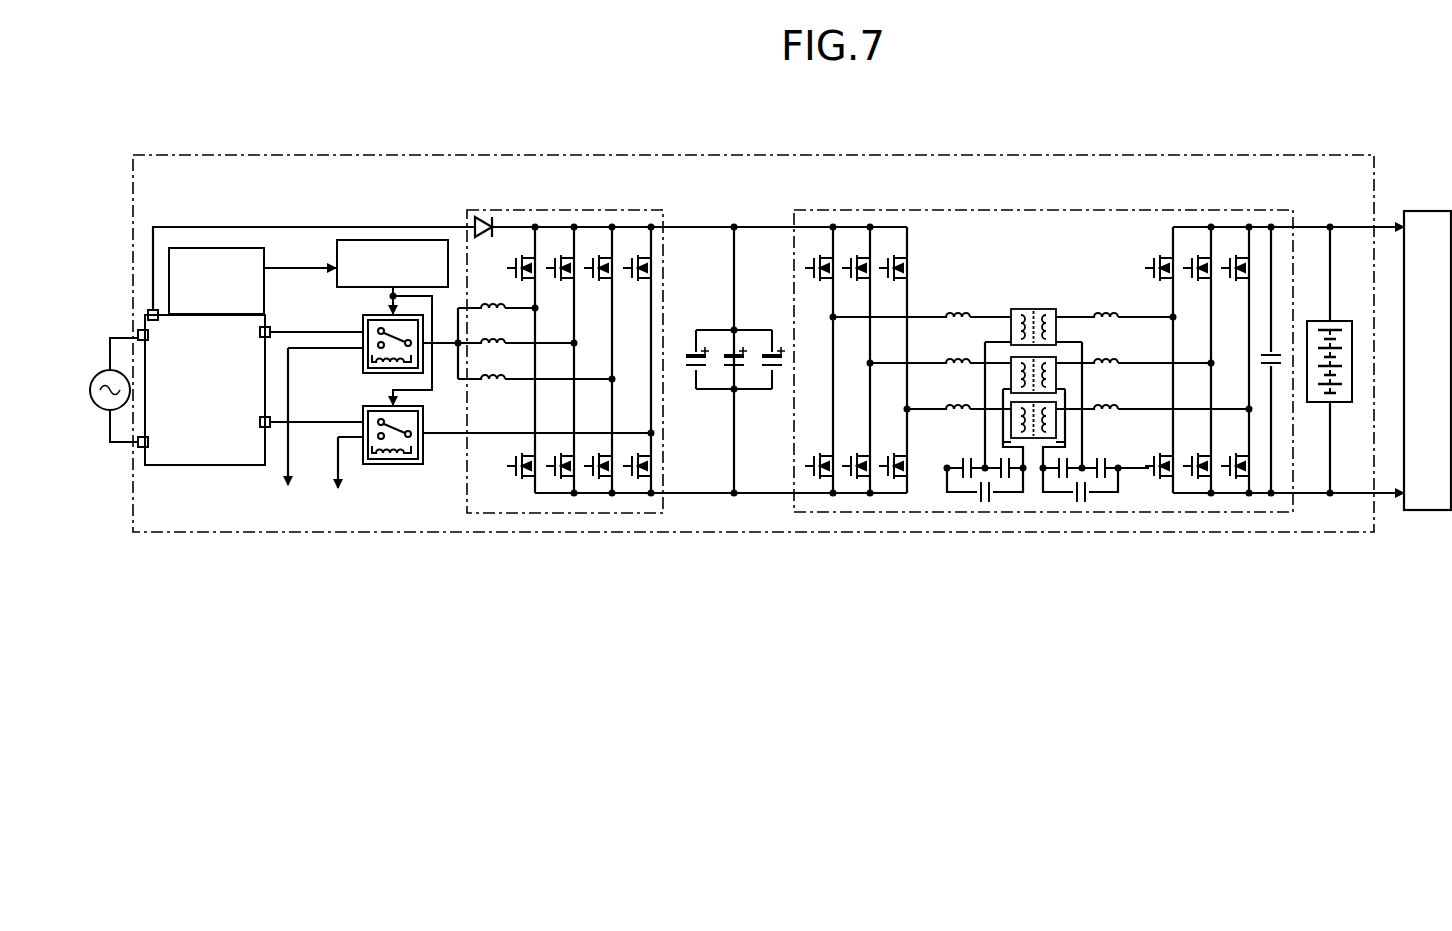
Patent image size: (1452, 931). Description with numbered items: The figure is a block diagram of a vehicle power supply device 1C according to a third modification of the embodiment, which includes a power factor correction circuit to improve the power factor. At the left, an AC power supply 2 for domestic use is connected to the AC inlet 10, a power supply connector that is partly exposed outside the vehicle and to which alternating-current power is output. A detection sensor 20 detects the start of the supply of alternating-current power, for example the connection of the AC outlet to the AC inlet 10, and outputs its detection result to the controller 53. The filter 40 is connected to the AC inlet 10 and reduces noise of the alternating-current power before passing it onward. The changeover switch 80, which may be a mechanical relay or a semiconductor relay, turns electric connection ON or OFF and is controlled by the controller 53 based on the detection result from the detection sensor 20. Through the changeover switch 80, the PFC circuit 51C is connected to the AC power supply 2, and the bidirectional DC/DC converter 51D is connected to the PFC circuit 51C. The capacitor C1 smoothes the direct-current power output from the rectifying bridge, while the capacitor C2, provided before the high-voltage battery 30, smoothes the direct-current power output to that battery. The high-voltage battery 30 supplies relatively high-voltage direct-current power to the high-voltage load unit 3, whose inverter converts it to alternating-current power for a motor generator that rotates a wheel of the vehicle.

The vehicle power supply device 1C is at (1308, 154).
The AC power supply 2 is at (106, 368).
The high-voltage load unit 3 is at (1432, 211).
The AC inlet 10 is at (143, 330).
The detection sensor 20 is at (214, 248).
The high-voltage battery 30 is at (1345, 321).
The filter 40 is at (196, 466).
The PFC circuit 51C is at (599, 210).
The bidirectional DC/DC converter 51D is at (1130, 210).
The controller 53 is at (370, 240).
The changeover switch 80 is at (362, 358).
The capacitor C1 is at (755, 330).
The capacitor C2 is at (1276, 352).